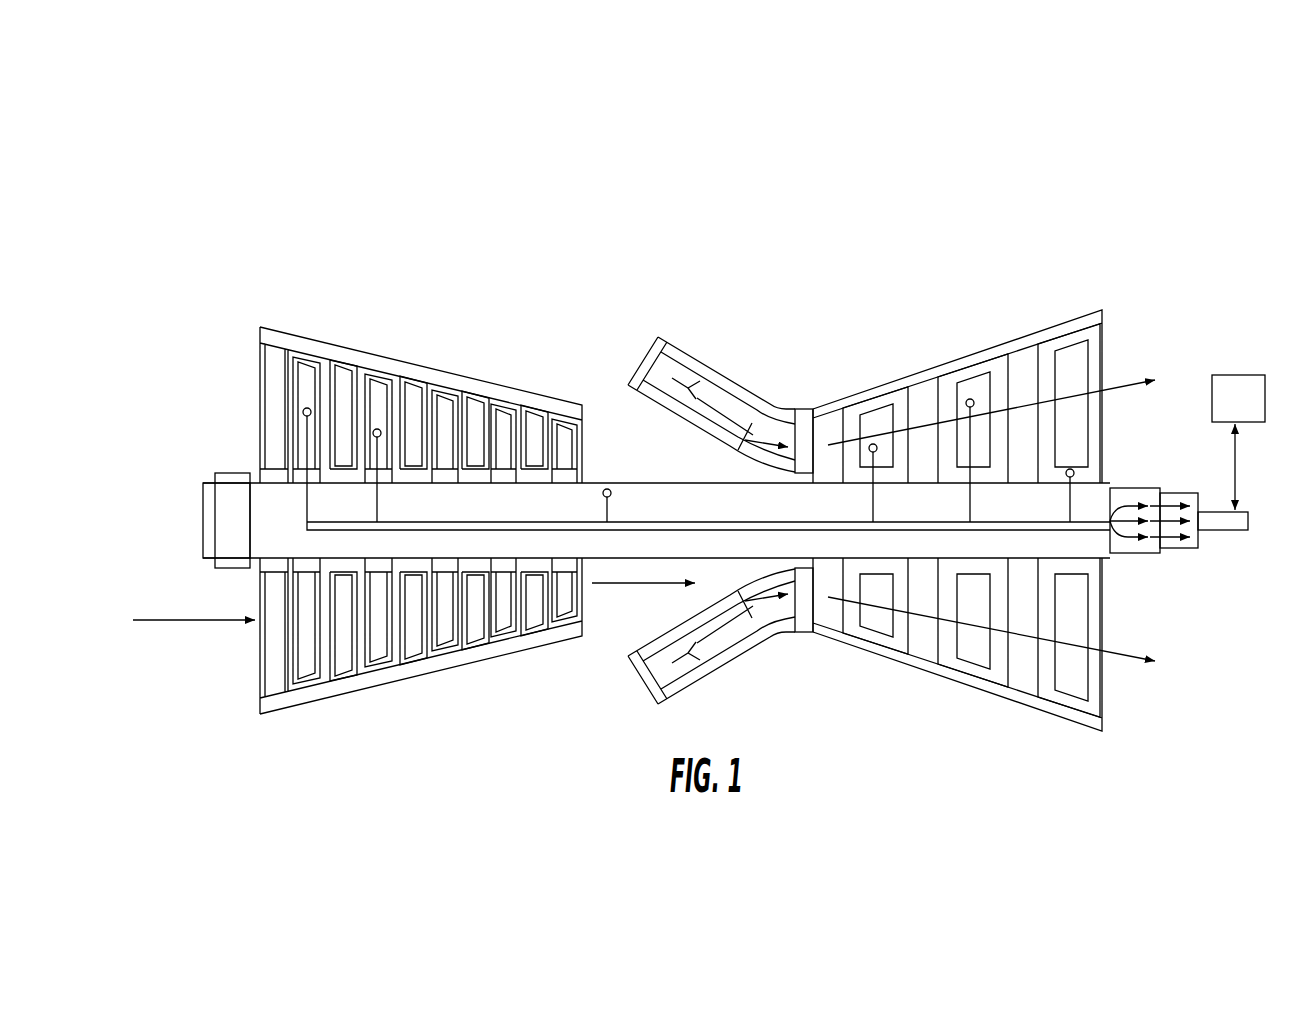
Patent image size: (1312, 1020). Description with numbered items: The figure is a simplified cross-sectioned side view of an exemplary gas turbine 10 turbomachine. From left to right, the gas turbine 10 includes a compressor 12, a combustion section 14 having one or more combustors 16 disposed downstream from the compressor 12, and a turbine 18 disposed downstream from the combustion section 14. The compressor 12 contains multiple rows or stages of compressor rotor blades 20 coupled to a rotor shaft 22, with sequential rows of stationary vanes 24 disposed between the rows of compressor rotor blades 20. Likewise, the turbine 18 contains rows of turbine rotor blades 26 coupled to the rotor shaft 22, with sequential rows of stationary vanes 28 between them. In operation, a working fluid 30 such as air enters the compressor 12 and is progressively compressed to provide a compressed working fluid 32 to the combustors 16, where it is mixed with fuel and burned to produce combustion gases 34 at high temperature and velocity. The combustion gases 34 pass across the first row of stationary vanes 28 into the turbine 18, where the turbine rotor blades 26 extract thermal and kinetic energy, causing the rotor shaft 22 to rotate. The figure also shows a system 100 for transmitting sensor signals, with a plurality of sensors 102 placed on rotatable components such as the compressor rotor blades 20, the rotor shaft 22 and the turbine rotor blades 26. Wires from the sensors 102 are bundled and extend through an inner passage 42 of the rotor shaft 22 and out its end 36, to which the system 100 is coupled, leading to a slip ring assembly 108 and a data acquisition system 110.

The gas turbine 10 is at (631, 180).
The compressor 12 is at (582, 405).
The combustion section 14 is at (813, 409).
The combustor 16 is at (686, 340).
The turbine 18 is at (1102, 310).
The compressor rotor blades 20 is at (375, 382).
The rotor shaft 22 is at (627, 479).
The stationary vanes 24 is at (415, 653).
The turbine rotor blades 26 is at (970, 650).
The stationary vanes 28 is at (917, 397).
The working fluid 30 is at (167, 620).
The compressed working fluid 32 is at (610, 585).
The combustion gases 34 is at (715, 410).
The end of the rotor shaft 36 is at (1116, 474).
The inner passage 42 is at (656, 520).
The system 100 is at (1175, 562).
The sensors 102 is at (303, 412).
The slip ring assembly 108 is at (1248, 521).
The data acquisition system 110 is at (1238, 442).